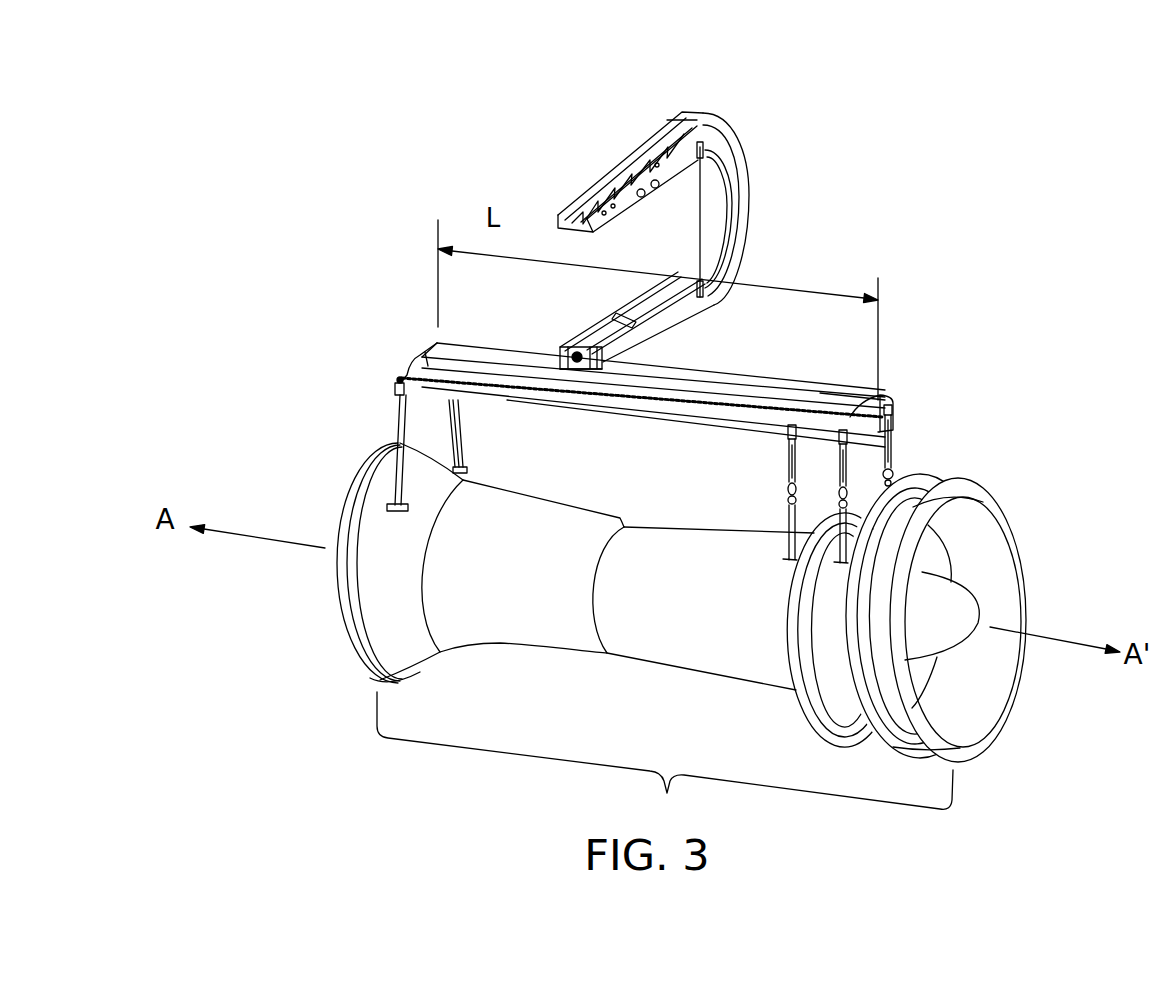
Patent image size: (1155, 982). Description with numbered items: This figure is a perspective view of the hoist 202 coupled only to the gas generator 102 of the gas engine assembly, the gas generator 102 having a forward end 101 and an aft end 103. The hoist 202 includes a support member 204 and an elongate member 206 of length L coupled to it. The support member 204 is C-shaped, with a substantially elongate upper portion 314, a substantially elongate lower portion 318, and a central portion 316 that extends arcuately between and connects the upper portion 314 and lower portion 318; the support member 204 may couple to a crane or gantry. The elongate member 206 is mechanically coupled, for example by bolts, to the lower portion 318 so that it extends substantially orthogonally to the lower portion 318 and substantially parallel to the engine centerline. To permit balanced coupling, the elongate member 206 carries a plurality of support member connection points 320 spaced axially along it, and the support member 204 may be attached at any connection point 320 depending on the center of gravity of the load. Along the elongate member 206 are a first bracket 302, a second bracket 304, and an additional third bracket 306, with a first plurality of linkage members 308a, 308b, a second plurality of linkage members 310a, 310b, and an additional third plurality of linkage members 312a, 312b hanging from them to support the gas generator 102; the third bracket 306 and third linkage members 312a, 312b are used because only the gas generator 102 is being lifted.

The forward end 101 is at (370, 683).
The gas generator 102 is at (665, 635).
The aft end 103 is at (993, 728).
The hoist 202 is at (686, 206).
The support member 204 is at (629, 142).
The elongate member 206 is at (639, 366).
The first bracket 302 is at (430, 350).
The second bracket 304 is at (823, 393).
The third bracket 306 is at (880, 397).
The first plurality of linkage members 308a is at (397, 442).
The first plurality of linkage members 308b is at (467, 428).
The second plurality of linkage members 310a is at (787, 517).
The second plurality of linkage members 310b is at (840, 487).
The third plurality of linkage members 312a is at (793, 640).
The third plurality of linkage members 312b is at (893, 450).
The upper portion 314 is at (598, 178).
The central portion 316 is at (747, 181).
The lower portion 318 is at (655, 330).
The support member connection points 320 is at (527, 380).